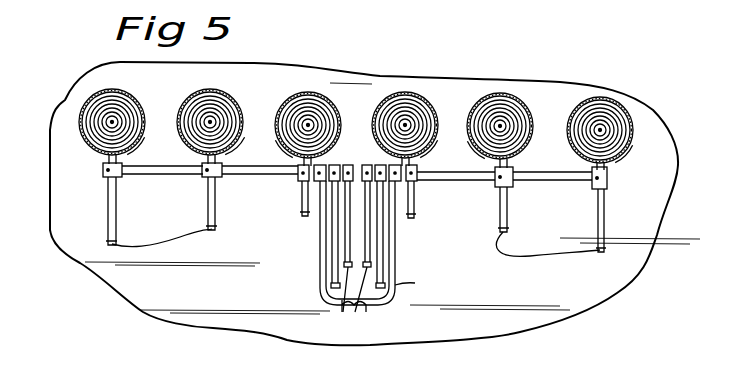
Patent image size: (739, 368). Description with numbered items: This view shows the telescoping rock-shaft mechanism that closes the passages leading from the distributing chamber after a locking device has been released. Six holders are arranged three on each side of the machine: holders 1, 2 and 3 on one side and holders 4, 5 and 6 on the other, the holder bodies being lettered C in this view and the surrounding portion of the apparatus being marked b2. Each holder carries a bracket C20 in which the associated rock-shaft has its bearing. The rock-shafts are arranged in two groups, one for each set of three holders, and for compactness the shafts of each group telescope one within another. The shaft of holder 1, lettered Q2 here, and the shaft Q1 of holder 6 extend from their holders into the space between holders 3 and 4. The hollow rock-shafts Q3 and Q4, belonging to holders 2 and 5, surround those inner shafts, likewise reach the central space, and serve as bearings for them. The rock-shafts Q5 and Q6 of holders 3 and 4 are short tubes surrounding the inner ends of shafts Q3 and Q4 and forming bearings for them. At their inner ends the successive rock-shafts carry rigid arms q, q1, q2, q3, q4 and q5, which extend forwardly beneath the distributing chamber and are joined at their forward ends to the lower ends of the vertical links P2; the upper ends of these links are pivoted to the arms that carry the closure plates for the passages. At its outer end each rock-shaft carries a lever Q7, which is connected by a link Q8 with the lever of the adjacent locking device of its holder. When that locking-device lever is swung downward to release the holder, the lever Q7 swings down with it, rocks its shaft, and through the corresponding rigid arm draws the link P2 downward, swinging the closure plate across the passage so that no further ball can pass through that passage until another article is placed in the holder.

The holder 1 is at (113, 121).
The holder 2 is at (210, 121).
The holder 3 is at (309, 124).
The holder 4 is at (406, 124).
The holder 5 is at (499, 125).
The holder 6 is at (601, 130).
The coil casing C is at (266, 88).
The bracket C20 is at (270, 150).
The rock-shaft Q1 is at (572, 181).
The bracket arm of first coil Q2 is at (108, 197).
The rock-shaft Q3 is at (250, 176).
The rock-shaft Q4 is at (483, 180).
The rock-shaft Q5 is at (301, 210).
The rock-shaft Q6 is at (420, 201).
The lever Q7 is at (600, 225).
The link Q8 is at (598, 252).
The rigid arm q is at (347, 213).
The rigid arm q1 is at (370, 229).
The rigid arm q2 is at (335, 240).
The rigid arm q3 is at (380, 246).
The rigid arm q4 is at (318, 276).
The rigid arm q5 is at (414, 288).
The vertical link P2 is at (372, 330).
The base plate outline b2 is at (375, 203).